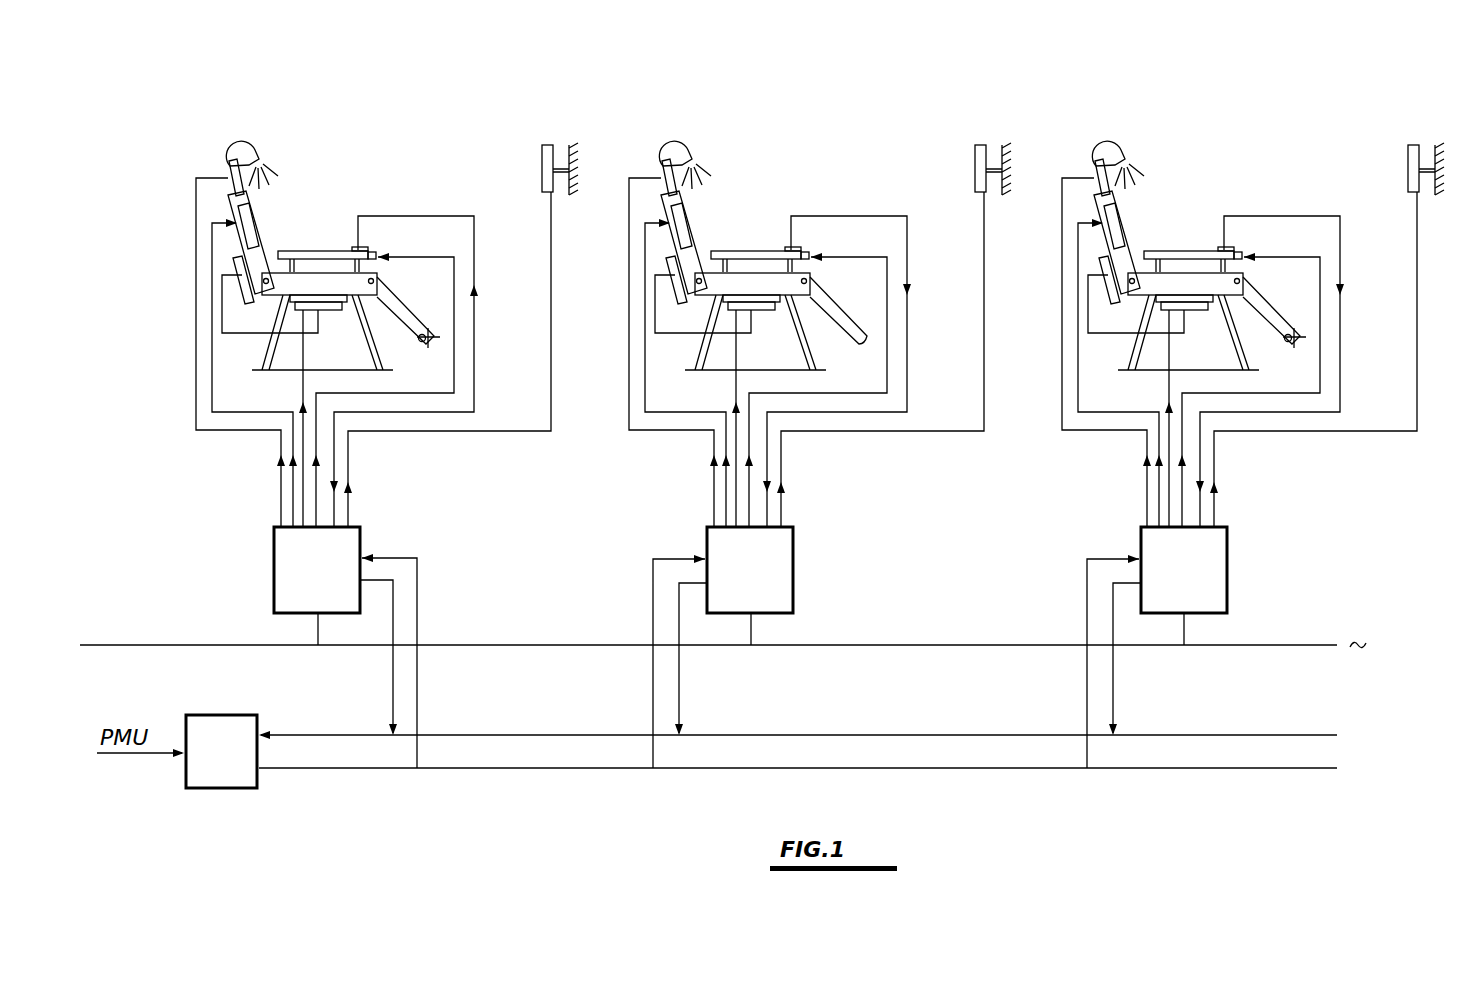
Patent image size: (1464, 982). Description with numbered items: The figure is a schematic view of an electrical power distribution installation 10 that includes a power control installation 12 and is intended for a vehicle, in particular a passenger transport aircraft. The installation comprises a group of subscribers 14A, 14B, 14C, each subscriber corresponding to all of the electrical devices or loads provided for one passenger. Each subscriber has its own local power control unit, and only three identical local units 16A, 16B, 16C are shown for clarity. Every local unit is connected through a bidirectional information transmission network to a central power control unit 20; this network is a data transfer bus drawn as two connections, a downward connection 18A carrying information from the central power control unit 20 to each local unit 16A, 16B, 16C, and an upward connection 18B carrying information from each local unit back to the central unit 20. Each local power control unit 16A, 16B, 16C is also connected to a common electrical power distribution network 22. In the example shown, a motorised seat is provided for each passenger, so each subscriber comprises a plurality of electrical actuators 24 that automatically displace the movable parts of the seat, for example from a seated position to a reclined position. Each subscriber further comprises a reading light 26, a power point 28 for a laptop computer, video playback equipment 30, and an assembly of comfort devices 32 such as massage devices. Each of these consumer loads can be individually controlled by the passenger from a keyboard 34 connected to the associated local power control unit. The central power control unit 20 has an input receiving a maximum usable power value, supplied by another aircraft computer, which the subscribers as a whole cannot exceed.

The electrical power distribution installation 10 is at (234, 91).
The power control installation 12 is at (845, 608).
The subscriber 14A is at (373, 315).
The subscriber 14B is at (806, 315).
The subscriber 14C is at (1239, 315).
The local power control unit 16A is at (345, 647).
The local power control unit 16B is at (723, 647).
The local power control unit 16C is at (1157, 647).
The downward connection of the information transmission network 18A is at (497, 770).
The upward connection of the information transmission network 18B is at (577, 733).
The central power control unit 20 is at (221, 751).
The common electrical power distribution network 22 is at (1268, 645).
The electrical actuators 24 is at (723, 309).
The reading light 26 is at (696, 149).
The power point 28 is at (832, 239).
The video playback equipment 30 is at (993, 139).
The assembly of comfort devices 32 is at (707, 226).
The keyboard 34 is at (774, 225).